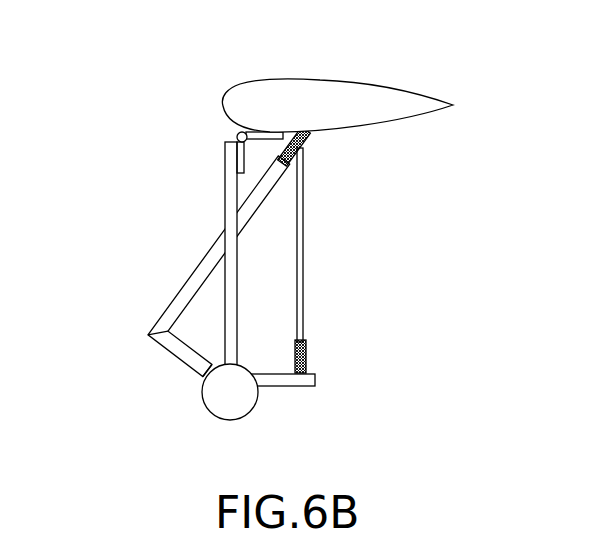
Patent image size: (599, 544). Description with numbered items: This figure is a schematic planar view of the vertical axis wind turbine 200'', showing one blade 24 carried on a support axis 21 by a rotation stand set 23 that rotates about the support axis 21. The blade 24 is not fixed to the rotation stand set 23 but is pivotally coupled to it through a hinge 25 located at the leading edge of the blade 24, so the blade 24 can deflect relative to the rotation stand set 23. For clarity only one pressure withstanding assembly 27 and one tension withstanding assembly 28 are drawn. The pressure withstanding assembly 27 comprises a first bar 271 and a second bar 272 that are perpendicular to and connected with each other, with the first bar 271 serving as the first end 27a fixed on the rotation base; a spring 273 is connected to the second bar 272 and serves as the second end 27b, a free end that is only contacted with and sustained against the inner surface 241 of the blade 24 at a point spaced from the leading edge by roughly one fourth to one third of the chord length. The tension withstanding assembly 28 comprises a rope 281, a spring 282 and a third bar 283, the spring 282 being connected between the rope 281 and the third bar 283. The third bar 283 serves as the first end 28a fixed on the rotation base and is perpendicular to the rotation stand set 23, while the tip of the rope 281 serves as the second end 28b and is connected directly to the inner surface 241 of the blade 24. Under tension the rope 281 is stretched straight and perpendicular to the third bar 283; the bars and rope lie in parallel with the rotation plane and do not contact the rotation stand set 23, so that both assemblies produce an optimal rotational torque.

The vertical axis wind turbine 200'' is at (289, 250).
The support axis 21 is at (238, 400).
The rotation stand set 23 is at (226, 186).
The blade 24 is at (345, 93).
The inner surface of the blade 241 is at (398, 125).
The hinge 25 is at (237, 133).
The pressure withstanding assembly 27 is at (166, 290).
The first end of the pressure withstanding assembly 27a is at (206, 375).
The second end of the pressure withstanding assembly 27b is at (313, 136).
The first bar 271 is at (172, 347).
The second bar 272 is at (221, 253).
The spring 273 is at (262, 116).
The tension withstanding assembly 28 is at (308, 290).
The first end of the tension withstanding assembly 28a is at (270, 372).
The second end of the tension withstanding assembly 28b is at (344, 165).
The rope 281 is at (306, 266).
The spring 282 is at (305, 341).
The third bar 283 is at (298, 381).